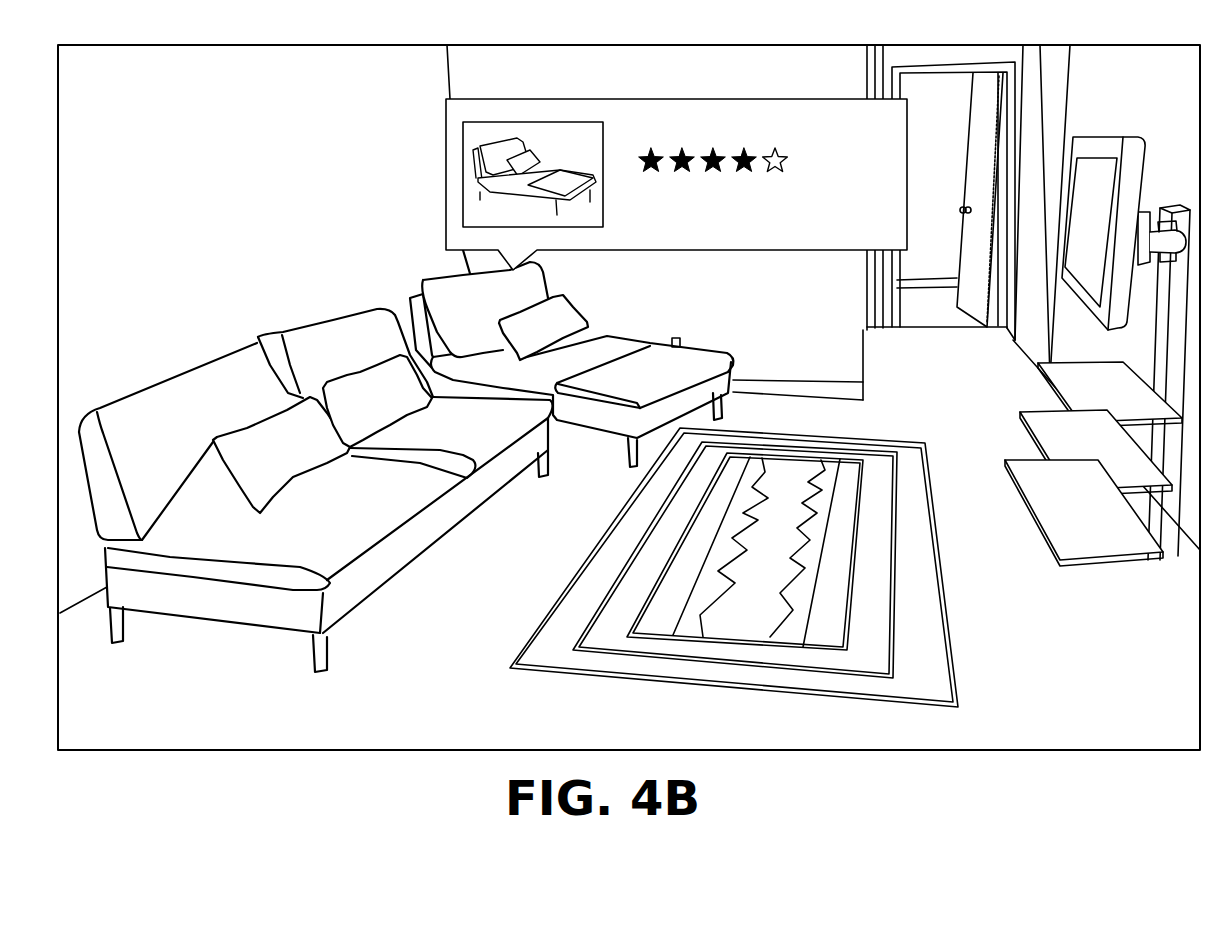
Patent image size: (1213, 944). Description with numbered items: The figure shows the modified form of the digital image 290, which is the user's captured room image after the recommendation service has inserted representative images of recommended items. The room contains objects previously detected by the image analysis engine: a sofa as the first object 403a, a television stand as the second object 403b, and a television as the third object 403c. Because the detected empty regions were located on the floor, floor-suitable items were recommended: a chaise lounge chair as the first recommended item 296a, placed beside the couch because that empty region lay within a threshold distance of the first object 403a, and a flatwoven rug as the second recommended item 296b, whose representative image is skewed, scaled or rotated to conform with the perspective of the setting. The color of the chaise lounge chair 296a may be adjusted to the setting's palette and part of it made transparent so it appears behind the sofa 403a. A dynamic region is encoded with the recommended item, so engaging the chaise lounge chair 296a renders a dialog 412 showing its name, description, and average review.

The modified form of the digital image 290 is at (1190, 737).
The first recommended item 296a is at (612, 332).
The second recommended item 296b is at (928, 438).
The first object 403a is at (204, 364).
The second object 403b is at (1047, 530).
The third object 403c is at (1100, 132).
The dialog 412 is at (890, 130).